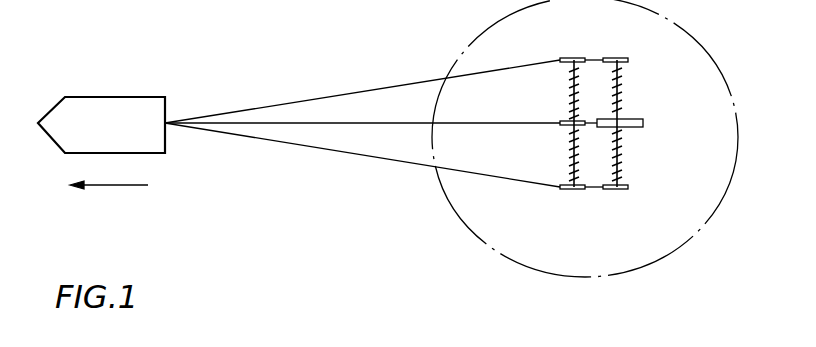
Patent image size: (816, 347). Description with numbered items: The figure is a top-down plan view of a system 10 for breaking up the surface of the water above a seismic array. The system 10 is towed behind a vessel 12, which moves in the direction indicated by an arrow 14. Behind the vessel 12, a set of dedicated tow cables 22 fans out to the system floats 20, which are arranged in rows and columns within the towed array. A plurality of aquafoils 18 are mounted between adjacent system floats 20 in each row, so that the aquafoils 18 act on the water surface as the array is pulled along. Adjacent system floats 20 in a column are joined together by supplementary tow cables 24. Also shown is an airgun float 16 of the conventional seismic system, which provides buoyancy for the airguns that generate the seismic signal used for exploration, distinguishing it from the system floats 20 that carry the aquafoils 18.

The system 10 is at (714, 212).
The vessel 12 is at (110, 107).
The arrow 14 is at (119, 187).
The airgun floats 16 is at (635, 124).
The aquafoils 18 is at (570, 88).
The system floats 20 is at (571, 58).
The dedicated tow cables 22 is at (300, 102).
The supplementary tow cables 24 is at (593, 59).